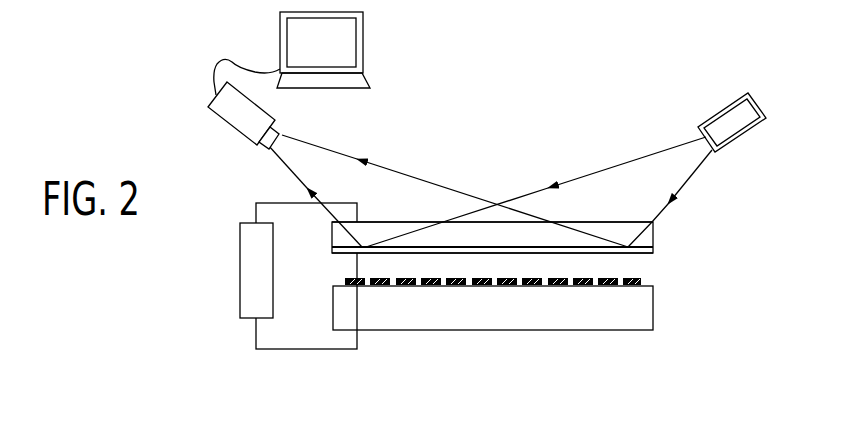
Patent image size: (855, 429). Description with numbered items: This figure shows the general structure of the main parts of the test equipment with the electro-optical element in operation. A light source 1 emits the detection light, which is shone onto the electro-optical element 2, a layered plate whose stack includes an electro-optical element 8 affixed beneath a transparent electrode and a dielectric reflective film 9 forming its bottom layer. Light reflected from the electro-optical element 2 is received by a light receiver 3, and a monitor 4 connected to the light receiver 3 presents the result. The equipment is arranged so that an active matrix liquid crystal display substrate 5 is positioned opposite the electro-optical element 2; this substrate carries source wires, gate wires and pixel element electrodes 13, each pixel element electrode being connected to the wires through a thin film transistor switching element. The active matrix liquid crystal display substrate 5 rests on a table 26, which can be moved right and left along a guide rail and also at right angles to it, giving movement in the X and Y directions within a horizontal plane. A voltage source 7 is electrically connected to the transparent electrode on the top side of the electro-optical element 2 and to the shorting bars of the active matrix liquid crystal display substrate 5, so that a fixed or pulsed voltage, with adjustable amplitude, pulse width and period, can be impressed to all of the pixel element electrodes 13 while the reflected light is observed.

The light source 1 is at (751, 140).
The electro-optical element 2 is at (658, 225).
The light receiver 3 is at (238, 121).
The monitor 4 is at (363, 43).
The active matrix liquid crystal display substrate 5 is at (547, 278).
The voltage source 7 is at (242, 320).
The electro-optical element 8 is at (621, 230).
The dielectric reflective film 9 is at (647, 254).
The pixel element electrodes 13 is at (380, 278).
The table 26 is at (582, 320).